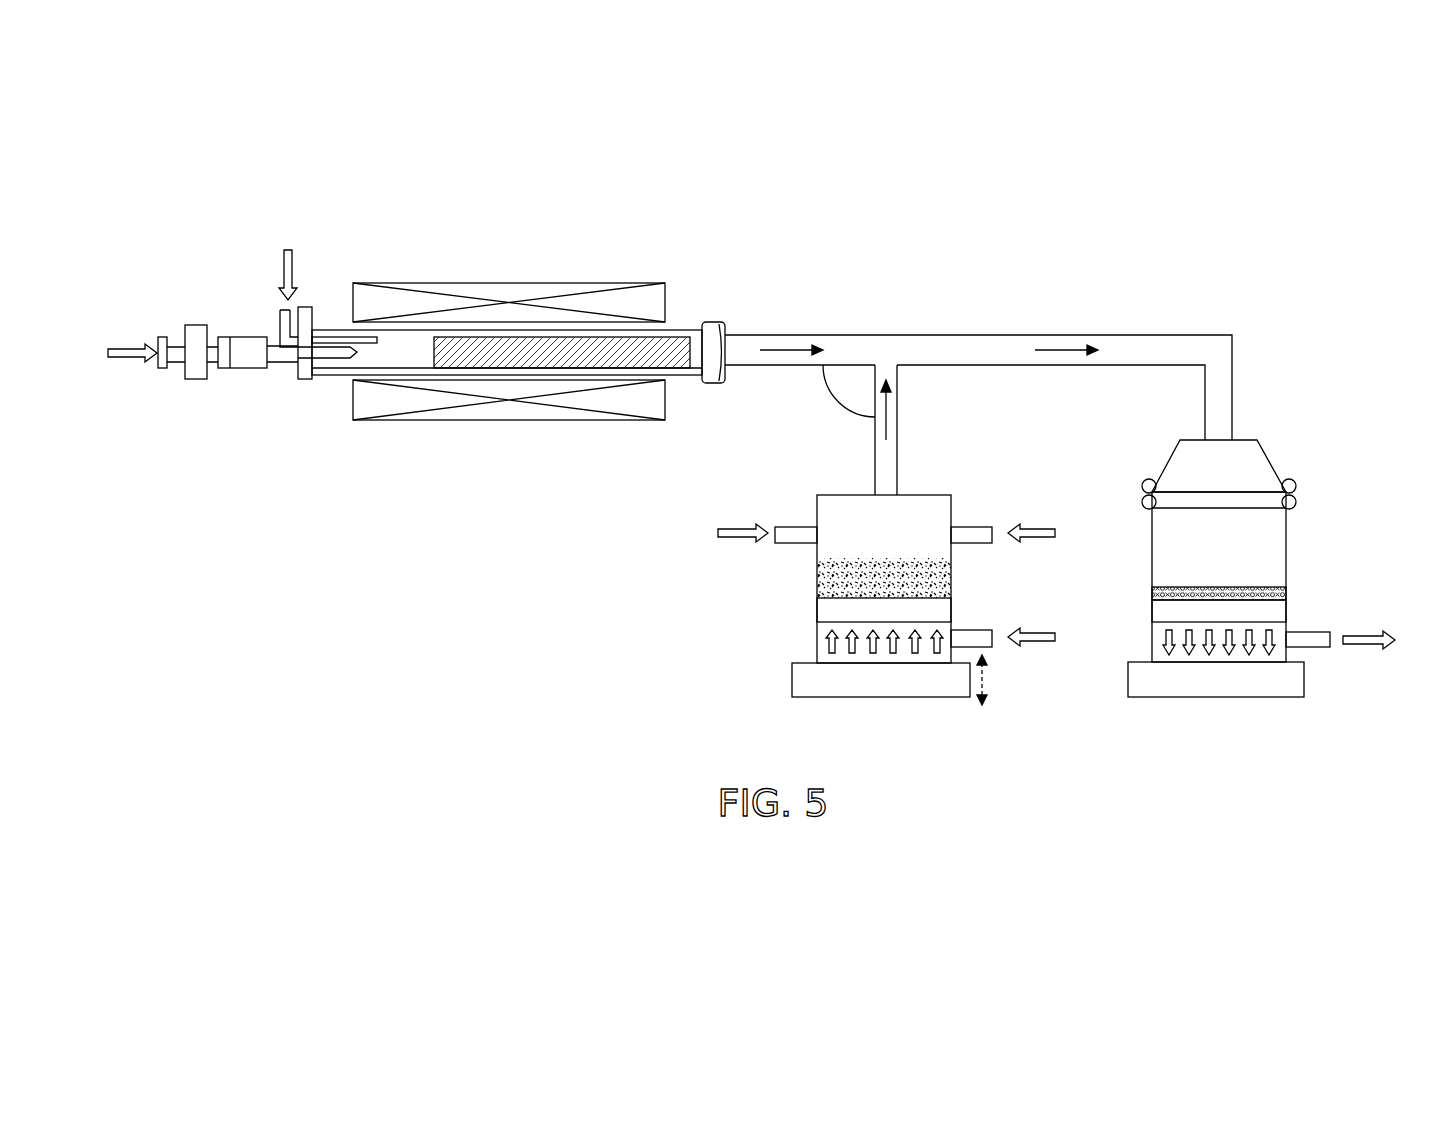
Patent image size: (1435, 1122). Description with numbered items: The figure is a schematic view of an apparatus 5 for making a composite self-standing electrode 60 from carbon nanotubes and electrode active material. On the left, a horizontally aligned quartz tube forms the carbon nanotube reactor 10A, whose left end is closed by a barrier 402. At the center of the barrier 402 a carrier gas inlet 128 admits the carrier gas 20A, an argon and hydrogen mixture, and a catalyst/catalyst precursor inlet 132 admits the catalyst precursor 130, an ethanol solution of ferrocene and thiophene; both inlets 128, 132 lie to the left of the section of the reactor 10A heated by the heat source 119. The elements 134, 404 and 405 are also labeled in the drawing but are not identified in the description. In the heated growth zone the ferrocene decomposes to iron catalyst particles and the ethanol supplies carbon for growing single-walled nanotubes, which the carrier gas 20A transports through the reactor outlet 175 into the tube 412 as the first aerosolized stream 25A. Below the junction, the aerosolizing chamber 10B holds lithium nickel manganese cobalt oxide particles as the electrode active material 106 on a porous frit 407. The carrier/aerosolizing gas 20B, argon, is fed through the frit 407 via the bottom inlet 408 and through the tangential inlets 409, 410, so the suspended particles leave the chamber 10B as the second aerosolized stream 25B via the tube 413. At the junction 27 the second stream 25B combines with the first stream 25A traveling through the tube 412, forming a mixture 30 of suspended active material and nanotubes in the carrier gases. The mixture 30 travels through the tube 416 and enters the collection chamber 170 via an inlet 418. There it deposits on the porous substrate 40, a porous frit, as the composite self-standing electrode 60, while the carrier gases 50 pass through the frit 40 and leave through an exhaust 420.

The apparatus 5 is at (1293, 302).
The carbon nanotube reactor 10A is at (550, 339).
The aerosolizing chamber 10B is at (870, 581).
The carrier gas 20A is at (290, 256).
The carrier/aerosolizing gas 20B is at (886, 586).
The first aerosolized stream 25A is at (778, 359).
The second aerosolized stream 25B is at (877, 432).
The junction 27 is at (888, 345).
The mixture 30 is at (1063, 345).
The porous substrate 40 is at (1291, 610).
The carrier gases 50 is at (1357, 641).
The composite self-standing electrode 60 is at (1287, 590).
The electrode active material 106 is at (951, 586).
The heat source 119 is at (600, 283).
The carrier gas inlet 128 is at (372, 346).
The catalyst precursor 130 is at (106, 354).
The catalyst/catalyst precursor inlet 132 is at (333, 351).
The actuator cylinder 134 is at (243, 336).
The collection chamber 170 is at (1278, 558).
The reactor outlet 175 is at (729, 320).
The barrier 402 is at (313, 305).
The feed drive assembly 404 is at (256, 397).
The lower heating coil 405 is at (592, 422).
The frit 407 is at (809, 610).
The inlet 408 is at (985, 641).
The inlet 409 is at (793, 527).
The inlet 410 is at (980, 529).
The tube 412 is at (829, 323).
The tube 413 is at (908, 405).
The tube 416 is at (1120, 322).
The inlet 418 is at (1244, 437).
The exhaust 420 is at (1335, 661).